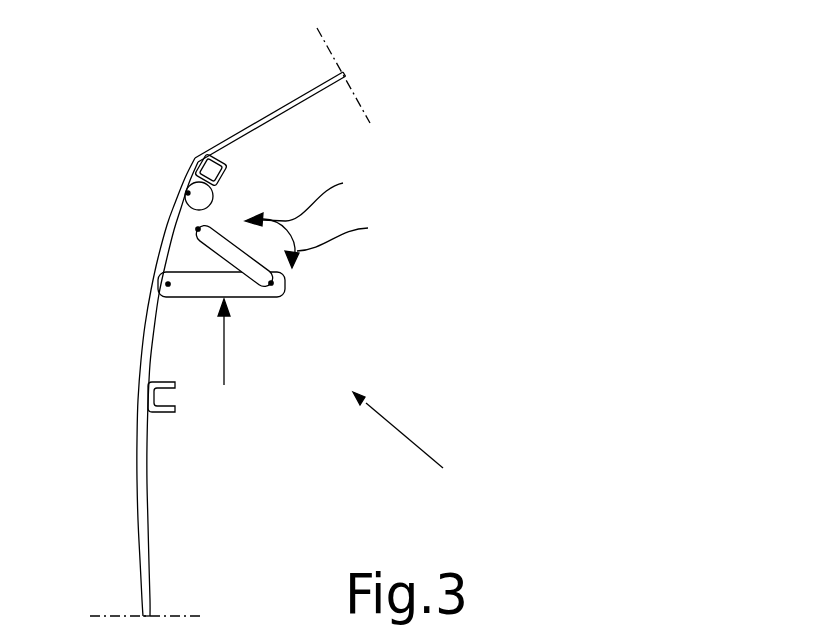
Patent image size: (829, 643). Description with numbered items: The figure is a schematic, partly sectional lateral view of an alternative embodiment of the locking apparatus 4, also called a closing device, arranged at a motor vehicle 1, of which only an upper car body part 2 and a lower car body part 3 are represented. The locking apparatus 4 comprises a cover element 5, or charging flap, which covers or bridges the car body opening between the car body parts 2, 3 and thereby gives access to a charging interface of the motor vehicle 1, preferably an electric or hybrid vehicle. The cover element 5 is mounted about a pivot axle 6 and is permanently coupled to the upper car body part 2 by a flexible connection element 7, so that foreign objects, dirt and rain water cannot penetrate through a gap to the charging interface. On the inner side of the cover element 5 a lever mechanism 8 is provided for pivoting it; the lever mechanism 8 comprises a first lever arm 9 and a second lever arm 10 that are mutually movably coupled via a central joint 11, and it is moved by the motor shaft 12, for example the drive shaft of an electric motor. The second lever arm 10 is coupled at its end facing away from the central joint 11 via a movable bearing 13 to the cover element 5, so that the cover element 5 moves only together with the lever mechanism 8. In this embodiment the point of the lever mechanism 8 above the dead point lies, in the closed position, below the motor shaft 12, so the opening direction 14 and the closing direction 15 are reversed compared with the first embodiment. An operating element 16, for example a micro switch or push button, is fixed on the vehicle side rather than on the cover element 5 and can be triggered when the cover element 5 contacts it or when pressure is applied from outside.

The motor vehicle 1 is at (270, 87).
The upper car body part 2 is at (266, 110).
The lower car body part 3 is at (137, 530).
The locking apparatus 4 is at (407, 444).
The cover element 5 is at (140, 338).
The pivot axle 6 is at (186, 193).
The flexible connection element 7 is at (227, 172).
The lever mechanism 8 is at (221, 359).
The first lever arm 9 is at (280, 295).
The second lever arm 10 is at (195, 298).
The central joint 11 is at (273, 285).
The motor shaft 12 is at (227, 281).
The movable bearing 13 is at (172, 313).
The opening direction 14 is at (311, 198).
The closing direction 15 is at (331, 241).
The operating element 16 is at (163, 413).